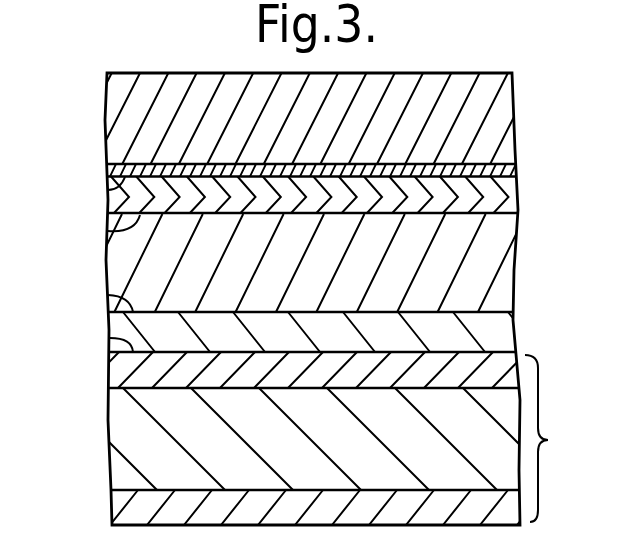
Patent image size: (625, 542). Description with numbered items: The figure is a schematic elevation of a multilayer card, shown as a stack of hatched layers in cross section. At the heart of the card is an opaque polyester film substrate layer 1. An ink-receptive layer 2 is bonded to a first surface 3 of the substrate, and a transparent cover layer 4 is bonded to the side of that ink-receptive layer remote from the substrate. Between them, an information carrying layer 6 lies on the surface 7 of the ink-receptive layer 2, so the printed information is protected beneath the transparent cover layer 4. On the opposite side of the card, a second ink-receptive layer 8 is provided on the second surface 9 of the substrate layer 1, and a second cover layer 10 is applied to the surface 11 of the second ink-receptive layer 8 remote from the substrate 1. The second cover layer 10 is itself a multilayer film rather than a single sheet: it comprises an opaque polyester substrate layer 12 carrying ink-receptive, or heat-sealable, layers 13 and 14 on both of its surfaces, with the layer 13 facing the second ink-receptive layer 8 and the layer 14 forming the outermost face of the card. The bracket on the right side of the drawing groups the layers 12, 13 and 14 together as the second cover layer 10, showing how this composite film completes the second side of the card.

The substrate layer 1 is at (497, 263).
The ink-receptive layer 2 is at (497, 197).
The first surface 3 is at (108, 231).
The transparent cover layer 4 is at (495, 111).
The information carrying layer 6 is at (518, 172).
The surface of the ink-receptive layer 7 is at (108, 190).
The second ink-receptive layer 8 is at (502, 335).
The second surface 9 is at (108, 295).
The second cover layer 10 is at (551, 438).
The surface of the second ink-receptive layer 11 is at (110, 338).
The opaque polyester substrate layer 12 is at (132, 435).
The ink-receptive layer 13 is at (125, 388).
The ink-receptive layer 14 is at (133, 508).